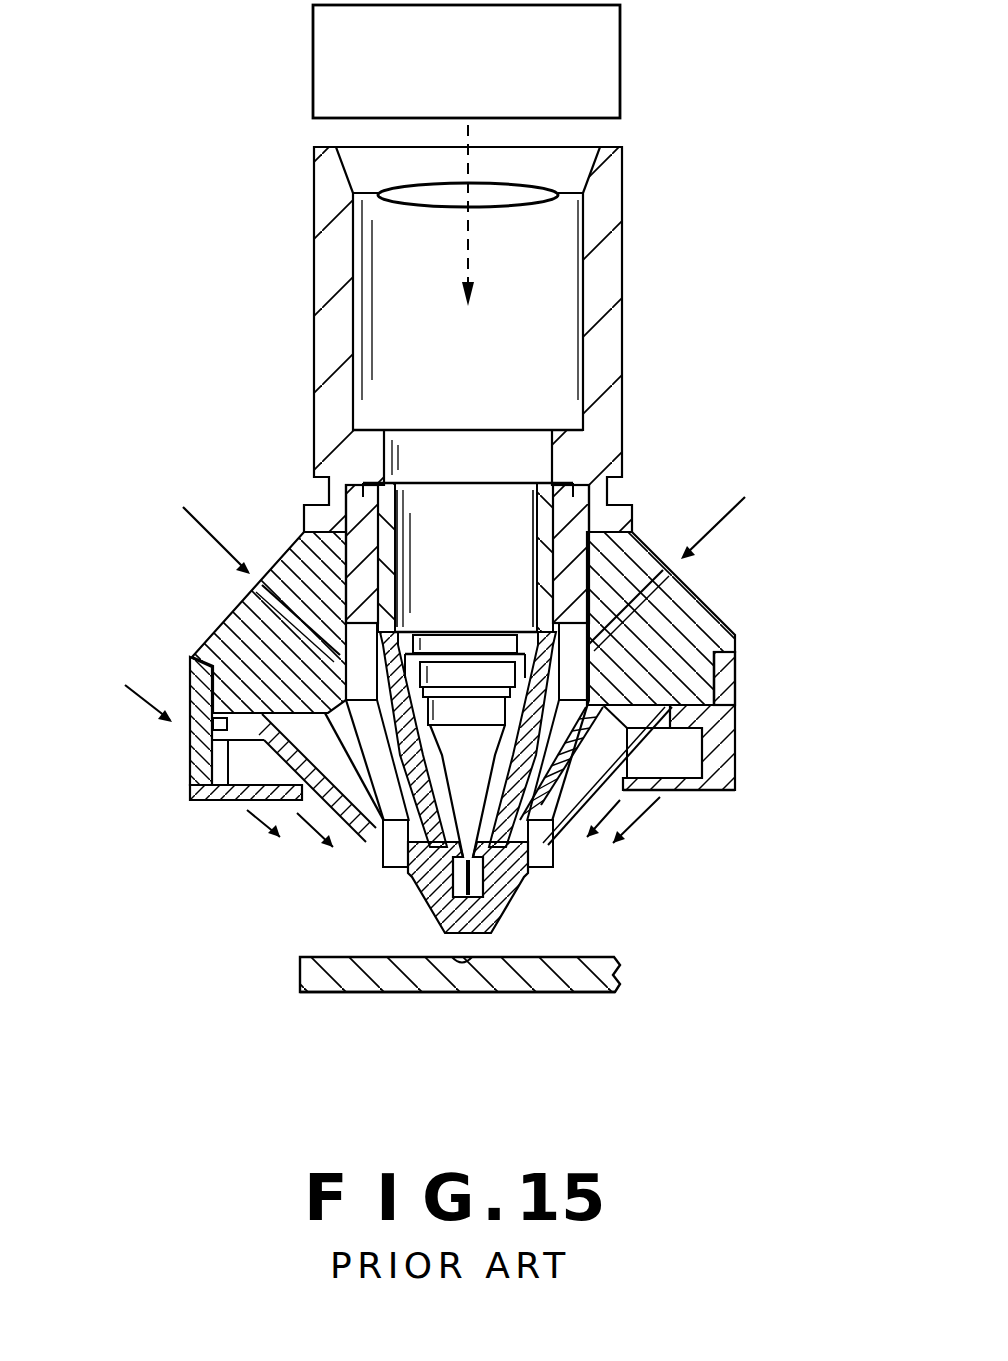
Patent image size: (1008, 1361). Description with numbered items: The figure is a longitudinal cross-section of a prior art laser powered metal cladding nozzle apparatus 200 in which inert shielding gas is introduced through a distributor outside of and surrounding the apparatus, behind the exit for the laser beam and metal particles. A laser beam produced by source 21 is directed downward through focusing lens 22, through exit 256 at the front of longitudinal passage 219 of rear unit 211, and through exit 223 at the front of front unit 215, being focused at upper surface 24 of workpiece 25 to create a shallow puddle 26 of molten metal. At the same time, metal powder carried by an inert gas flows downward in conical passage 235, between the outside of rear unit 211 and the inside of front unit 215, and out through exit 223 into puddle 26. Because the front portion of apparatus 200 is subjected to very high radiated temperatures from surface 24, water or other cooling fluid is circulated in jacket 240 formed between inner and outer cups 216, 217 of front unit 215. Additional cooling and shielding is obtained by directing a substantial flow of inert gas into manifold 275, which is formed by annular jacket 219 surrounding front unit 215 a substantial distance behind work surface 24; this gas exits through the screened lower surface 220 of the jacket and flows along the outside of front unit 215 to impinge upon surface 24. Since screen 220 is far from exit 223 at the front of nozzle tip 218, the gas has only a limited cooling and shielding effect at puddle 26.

The laser source 21 is at (621, 76).
The focusing lens 22 is at (541, 187).
The nozzle apparatus 200 is at (238, 190).
The rear unit 211 is at (314, 350).
The front unit 215 is at (740, 654).
The inner cup 216 is at (681, 633).
The outer cup 217 is at (746, 882).
The nozzle tip 218 is at (412, 890).
The annular jacket 219 is at (737, 731).
The screened lower surface 220 is at (687, 791).
The exit 223 is at (478, 944).
The conical passage 235 is at (378, 736).
The jacket 240 is at (620, 735).
The exit 256 is at (500, 905).
The manifold 275 is at (247, 763).
The upper surface 24 is at (617, 957).
The workpiece 25 is at (374, 994).
The puddle 26 is at (459, 962).